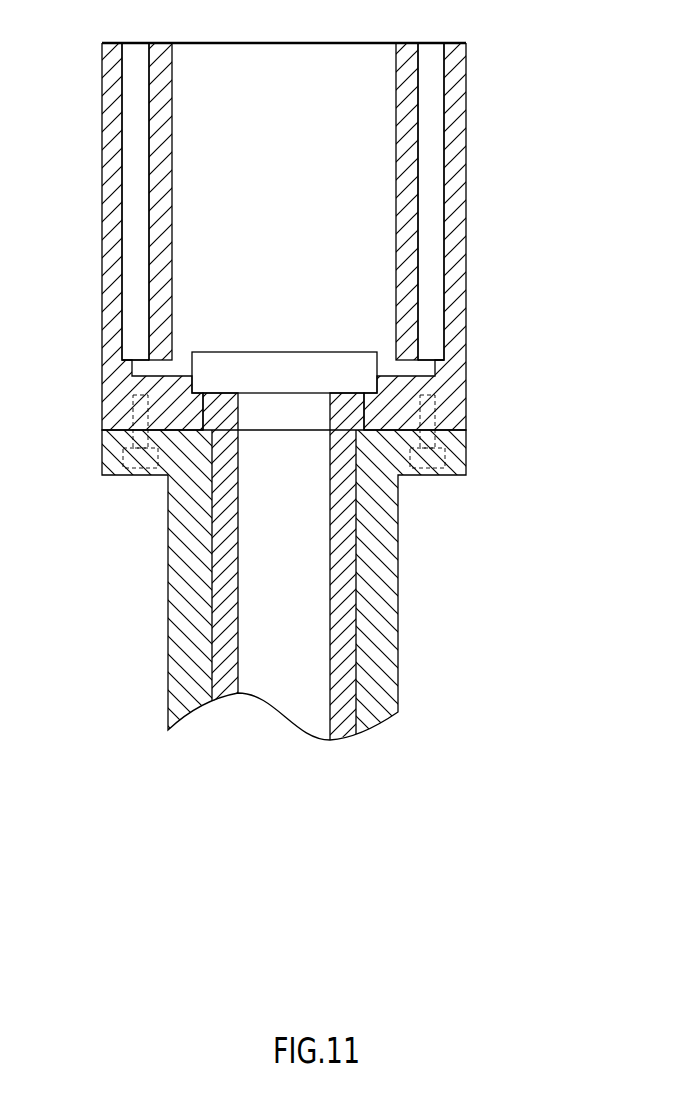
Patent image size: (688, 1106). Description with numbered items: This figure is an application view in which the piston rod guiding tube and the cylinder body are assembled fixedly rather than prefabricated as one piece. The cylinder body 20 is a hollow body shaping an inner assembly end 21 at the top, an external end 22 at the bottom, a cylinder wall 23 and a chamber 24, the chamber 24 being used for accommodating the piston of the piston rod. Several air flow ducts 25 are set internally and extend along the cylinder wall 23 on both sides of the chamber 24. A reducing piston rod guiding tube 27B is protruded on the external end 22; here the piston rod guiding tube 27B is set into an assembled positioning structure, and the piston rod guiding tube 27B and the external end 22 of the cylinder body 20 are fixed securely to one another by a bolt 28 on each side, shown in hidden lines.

The cylinder body 20 is at (326, 380).
The inner assembly end 21 is at (460, 31).
The external end 22 is at (108, 475).
The cylinder wall 23 is at (462, 183).
The chamber 24 is at (212, 187).
The air flow ducts 25 is at (118, 246).
The piston rod guiding tube 27B is at (398, 590).
The bolt 28 is at (120, 448).